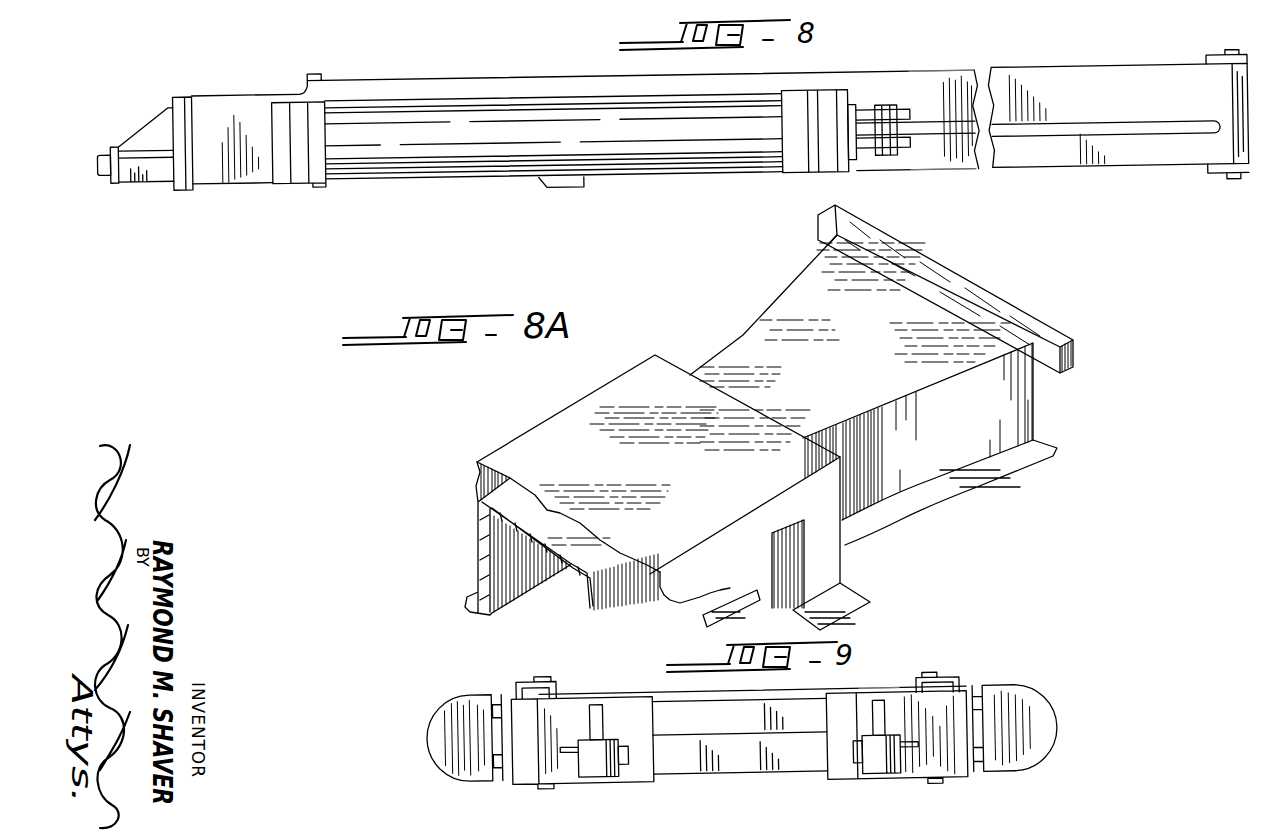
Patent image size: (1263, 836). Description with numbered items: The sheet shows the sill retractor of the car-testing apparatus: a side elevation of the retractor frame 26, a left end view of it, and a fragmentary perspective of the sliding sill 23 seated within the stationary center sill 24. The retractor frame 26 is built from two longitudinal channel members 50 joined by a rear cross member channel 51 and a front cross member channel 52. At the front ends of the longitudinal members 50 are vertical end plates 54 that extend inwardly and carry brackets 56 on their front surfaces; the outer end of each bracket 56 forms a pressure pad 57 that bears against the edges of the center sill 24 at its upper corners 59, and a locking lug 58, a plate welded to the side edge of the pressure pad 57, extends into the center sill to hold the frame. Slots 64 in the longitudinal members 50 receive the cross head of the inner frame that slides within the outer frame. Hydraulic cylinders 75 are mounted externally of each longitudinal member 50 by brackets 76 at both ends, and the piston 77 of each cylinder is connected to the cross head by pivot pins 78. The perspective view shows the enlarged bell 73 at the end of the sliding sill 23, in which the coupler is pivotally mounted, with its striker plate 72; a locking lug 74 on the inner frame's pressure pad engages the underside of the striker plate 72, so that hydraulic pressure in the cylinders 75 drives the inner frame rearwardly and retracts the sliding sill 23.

In FIG. 8A, the sliding sill 23 is at (853, 508).
In FIG. 8A, the stationary center sill 24 is at (840, 568).
In FIG. 8, the retractor frame 26 is at (958, 77).
In FIG. 9, the retractor frame 26 is at (878, 675).
In FIG. 8, the longitudinal channel members 50 is at (1113, 72).
In FIG. 9, the rear cross member channel 51 is at (760, 766).
In FIG. 9, the front cross member channel 52 is at (732, 724).
In FIG. 8, the vertical end plates 54 is at (185, 90).
In FIG. 9, the vertical end plates 54 is at (648, 710).
In FIG. 8, the brackets 56 is at (158, 175).
In FIG. 9, the brackets 56 is at (598, 702).
In FIG. 8, the pressure pad 57 is at (113, 176).
In FIG. 9, the pressure pad 57 is at (607, 775).
In FIG. 8, the locking lug 58 is at (103, 150).
In FIG. 9, the locking lug 58 is at (628, 754).
In FIG. 8A, the upper corners 59 is at (656, 354).
In FIG. 8, the slots 64 is at (1182, 128).
In FIG. 8A, the striker plate 72 is at (836, 212).
In FIG. 8A, the bell 73 is at (1022, 448).
In FIG. 8, the locking lug 74 is at (570, 184).
In FIG. 8, the hydraulic cylinders 75 is at (343, 139).
In FIG. 8, the brackets 76 is at (318, 158).
In FIG. 9, the brackets 76 is at (457, 706).
In FIG. 8, the piston 77 is at (851, 108).
In FIG. 8, the pivot pins 78 is at (886, 108).